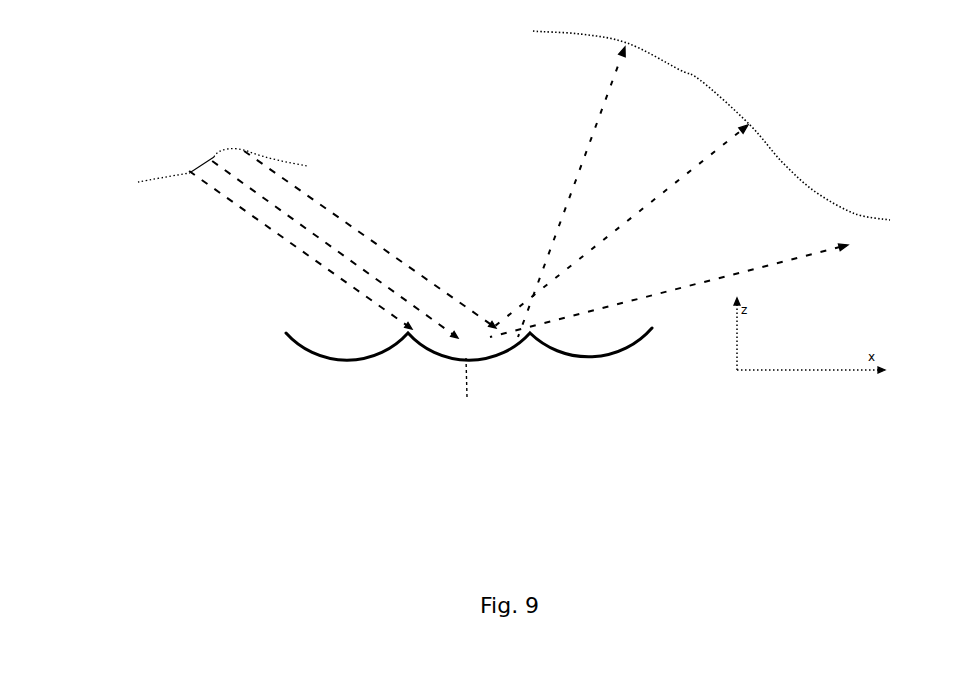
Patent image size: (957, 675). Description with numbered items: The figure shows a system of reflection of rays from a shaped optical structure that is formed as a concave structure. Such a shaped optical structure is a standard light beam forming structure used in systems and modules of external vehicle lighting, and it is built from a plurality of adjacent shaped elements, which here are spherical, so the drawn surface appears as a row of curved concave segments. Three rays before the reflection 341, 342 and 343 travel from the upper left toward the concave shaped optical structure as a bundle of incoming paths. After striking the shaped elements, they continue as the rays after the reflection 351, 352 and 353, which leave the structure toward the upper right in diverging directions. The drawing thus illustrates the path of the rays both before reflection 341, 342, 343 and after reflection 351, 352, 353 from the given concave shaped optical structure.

The ray before reflection 341 is at (307, 262).
The ray before reflection 342 is at (290, 220).
The ray before reflection 343 is at (273, 183).
The ray after reflection 351 is at (630, 57).
The ray after reflection 352 is at (738, 92).
The ray after reflection 353 is at (863, 238).